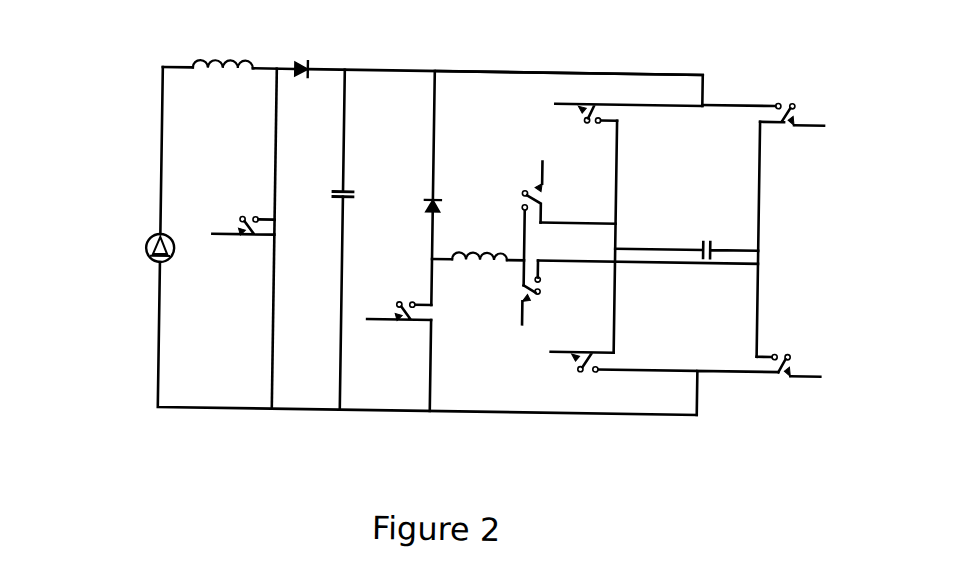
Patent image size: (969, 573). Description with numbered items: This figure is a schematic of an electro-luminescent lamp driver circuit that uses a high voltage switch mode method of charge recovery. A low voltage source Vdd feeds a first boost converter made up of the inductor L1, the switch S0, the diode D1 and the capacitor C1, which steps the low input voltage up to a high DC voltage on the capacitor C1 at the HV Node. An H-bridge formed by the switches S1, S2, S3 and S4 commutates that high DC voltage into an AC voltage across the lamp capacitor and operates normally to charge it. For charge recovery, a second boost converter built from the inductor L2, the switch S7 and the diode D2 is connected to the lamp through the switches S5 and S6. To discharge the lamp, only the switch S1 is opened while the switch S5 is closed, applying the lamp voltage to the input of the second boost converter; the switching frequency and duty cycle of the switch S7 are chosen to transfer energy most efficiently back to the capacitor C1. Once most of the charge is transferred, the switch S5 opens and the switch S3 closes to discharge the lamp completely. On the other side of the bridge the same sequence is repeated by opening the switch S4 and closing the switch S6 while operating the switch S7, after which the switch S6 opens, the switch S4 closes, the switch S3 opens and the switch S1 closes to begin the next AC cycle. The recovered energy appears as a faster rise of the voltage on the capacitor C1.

The low voltage source Vdd is at (102, 243).
The inductor L1 is at (219, 49).
The diode D1 is at (311, 54).
The high voltage node HV Node is at (569, 63).
The switch S0 is at (243, 209).
The capacitor C1 is at (326, 196).
The diode D2 is at (413, 210).
The inductor L2 is at (480, 242).
The switch S7 is at (399, 295).
The switch S5 is at (512, 192).
The switch S6 is at (511, 292).
The switch S1 is at (629, 126).
The switch S3 is at (582, 380).
The switch S2 is at (763, 101).
The switch S4 is at (788, 352).